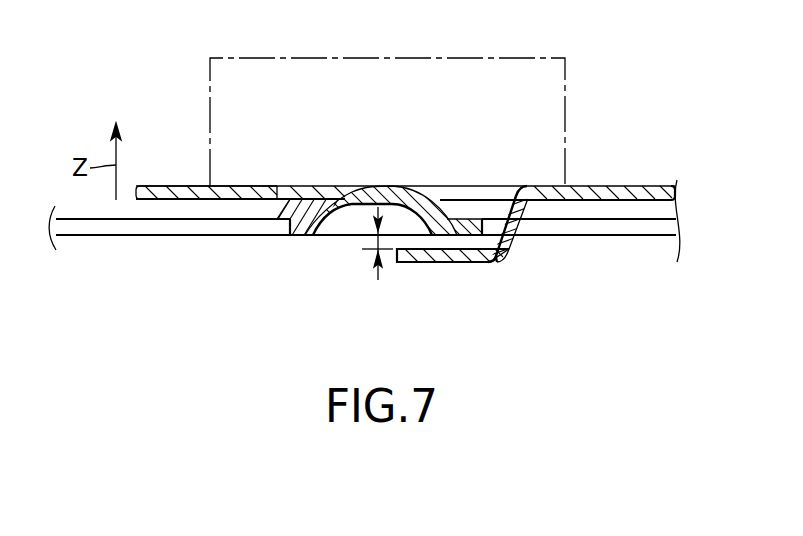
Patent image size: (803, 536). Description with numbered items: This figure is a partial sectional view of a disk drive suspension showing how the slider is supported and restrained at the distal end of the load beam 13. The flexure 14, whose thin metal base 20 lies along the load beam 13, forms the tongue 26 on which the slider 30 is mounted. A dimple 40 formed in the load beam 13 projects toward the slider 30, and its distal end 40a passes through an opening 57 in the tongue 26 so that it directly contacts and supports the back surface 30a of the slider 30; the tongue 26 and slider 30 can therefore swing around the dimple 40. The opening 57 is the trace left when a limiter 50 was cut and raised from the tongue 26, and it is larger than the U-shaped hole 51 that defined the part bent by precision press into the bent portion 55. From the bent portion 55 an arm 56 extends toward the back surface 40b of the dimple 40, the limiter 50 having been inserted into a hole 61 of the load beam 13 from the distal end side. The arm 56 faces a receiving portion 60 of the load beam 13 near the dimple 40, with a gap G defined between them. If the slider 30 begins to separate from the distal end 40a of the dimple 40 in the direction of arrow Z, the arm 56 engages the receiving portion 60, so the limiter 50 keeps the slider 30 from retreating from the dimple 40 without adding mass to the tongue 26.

The load beam 13 is at (170, 236).
The flexure 14 is at (645, 181).
The metal base 20 is at (605, 185).
The tongue 26 is at (166, 185).
The slider 30 is at (512, 58).
The back surface of the slider 30a is at (292, 198).
The dimple 40 is at (435, 189).
The distal end of the dimple 40a is at (380, 185).
The back surface of the dimple 40b is at (420, 214).
The limiter 50 is at (486, 268).
The U-shaped hole 51 is at (514, 190).
The bent portion 55 is at (543, 238).
The arm 56 is at (425, 264).
The opening 57 is at (337, 187).
The receiving portion 60 is at (459, 262).
The hole 61 is at (600, 228).
The gap G is at (375, 240).